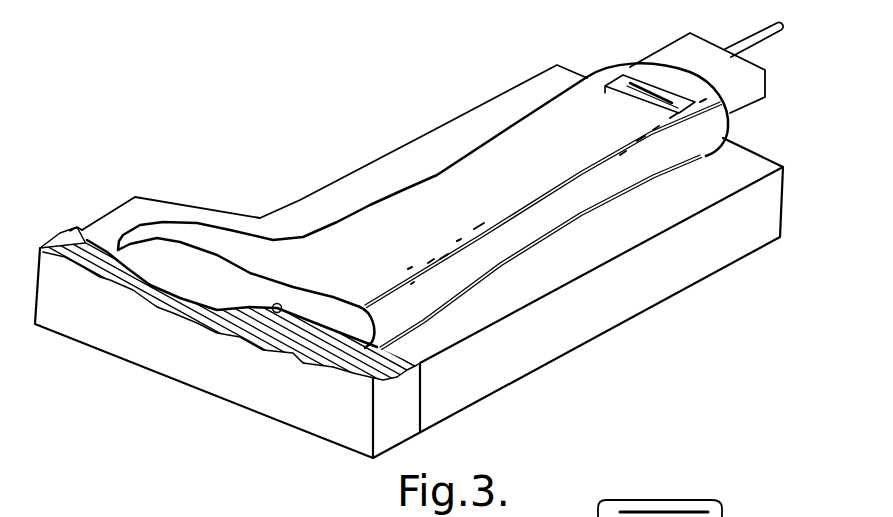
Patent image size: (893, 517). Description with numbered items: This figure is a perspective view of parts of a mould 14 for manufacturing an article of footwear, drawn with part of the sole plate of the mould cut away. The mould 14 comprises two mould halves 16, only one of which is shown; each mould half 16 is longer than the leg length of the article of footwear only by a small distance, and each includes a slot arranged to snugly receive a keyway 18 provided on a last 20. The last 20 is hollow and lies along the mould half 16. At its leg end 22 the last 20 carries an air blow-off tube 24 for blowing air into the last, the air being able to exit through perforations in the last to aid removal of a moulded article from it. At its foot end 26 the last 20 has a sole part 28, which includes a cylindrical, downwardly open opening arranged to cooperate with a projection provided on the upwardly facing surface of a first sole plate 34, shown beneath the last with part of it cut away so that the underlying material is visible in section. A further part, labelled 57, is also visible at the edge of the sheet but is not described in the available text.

The mould 14 is at (461, 52).
The mould half 16 is at (397, 157).
The keyway 18 is at (624, 76).
The last 20 is at (363, 208).
The leg end 22 is at (707, 134).
The air blow-off tube 24 is at (783, 30).
The foot end 26 is at (393, 318).
The sole part 28 is at (343, 310).
The first sole plate 34 is at (177, 352).
The housing part 57 is at (648, 503).